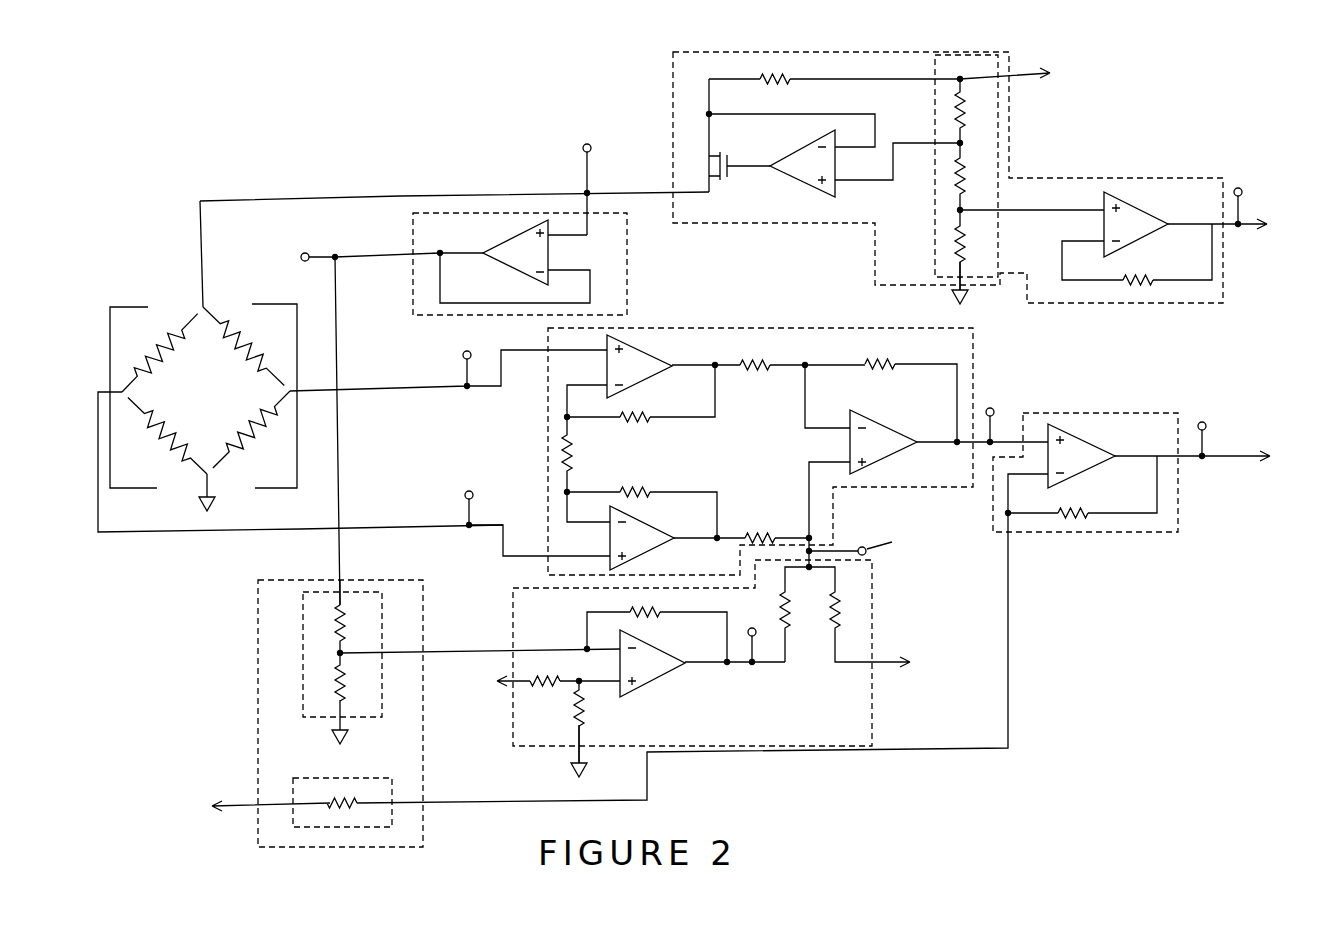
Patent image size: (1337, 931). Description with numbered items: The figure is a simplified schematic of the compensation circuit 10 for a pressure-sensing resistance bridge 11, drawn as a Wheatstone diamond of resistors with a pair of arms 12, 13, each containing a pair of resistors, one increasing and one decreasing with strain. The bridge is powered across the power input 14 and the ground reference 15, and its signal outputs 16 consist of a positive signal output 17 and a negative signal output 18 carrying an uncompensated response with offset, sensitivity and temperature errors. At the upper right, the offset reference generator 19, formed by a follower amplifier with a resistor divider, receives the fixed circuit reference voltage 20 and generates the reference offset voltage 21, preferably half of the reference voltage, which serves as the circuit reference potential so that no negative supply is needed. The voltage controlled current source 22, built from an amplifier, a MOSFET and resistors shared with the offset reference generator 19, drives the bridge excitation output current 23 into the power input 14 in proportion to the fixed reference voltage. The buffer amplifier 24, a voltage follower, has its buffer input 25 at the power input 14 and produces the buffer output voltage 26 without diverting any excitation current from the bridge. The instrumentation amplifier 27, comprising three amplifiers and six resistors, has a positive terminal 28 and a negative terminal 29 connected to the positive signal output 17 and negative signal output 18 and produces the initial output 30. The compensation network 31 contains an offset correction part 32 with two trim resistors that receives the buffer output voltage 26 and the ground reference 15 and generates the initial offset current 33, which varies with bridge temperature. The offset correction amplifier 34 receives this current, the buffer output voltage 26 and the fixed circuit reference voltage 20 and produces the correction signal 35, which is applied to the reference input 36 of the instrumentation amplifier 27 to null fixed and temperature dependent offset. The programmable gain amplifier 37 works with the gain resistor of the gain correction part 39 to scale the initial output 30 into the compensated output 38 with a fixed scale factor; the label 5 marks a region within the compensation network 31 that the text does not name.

The temperature sensor 5 is at (373, 667).
The compensation circuit 10 is at (430, 153).
The resistance bridge 11 is at (167, 305).
The arm 12 is at (110, 307).
The arm 13 is at (297, 316).
The power input 14 is at (203, 307).
The ground reference 15 is at (211, 481).
The signal outputs 16 is at (396, 385).
The positive signal output 17 is at (461, 524).
The negative signal output 18 is at (464, 386).
The offset reference generator 19 is at (1183, 178).
The fixed circuit reference voltage 20 is at (1025, 76).
The reference offset voltage 21 is at (1250, 225).
The voltage controlled current source 22 is at (673, 76).
The bridge excitation output current 23 is at (324, 194).
The buffer amplifier 24 is at (627, 278).
The buffer input 25 is at (586, 195).
The buffer output voltage 26 is at (388, 257).
The instrumentation amplifier 27 is at (790, 328).
The positive terminal 28 is at (548, 557).
The negative terminal 29 is at (548, 356).
The initial output 30 is at (996, 440).
The compensation network 31 is at (258, 732).
The offset correction part 32 is at (303, 696).
The initial offset current 33 is at (497, 646).
The offset correction amplifier 34 is at (872, 712).
The correction signal 35 is at (865, 548).
The reference input 36 is at (809, 546).
The programmable gain amplifier 37 is at (1190, 368).
The compensated output 38 is at (1245, 456).
The gain correction part 39 is at (394, 816).